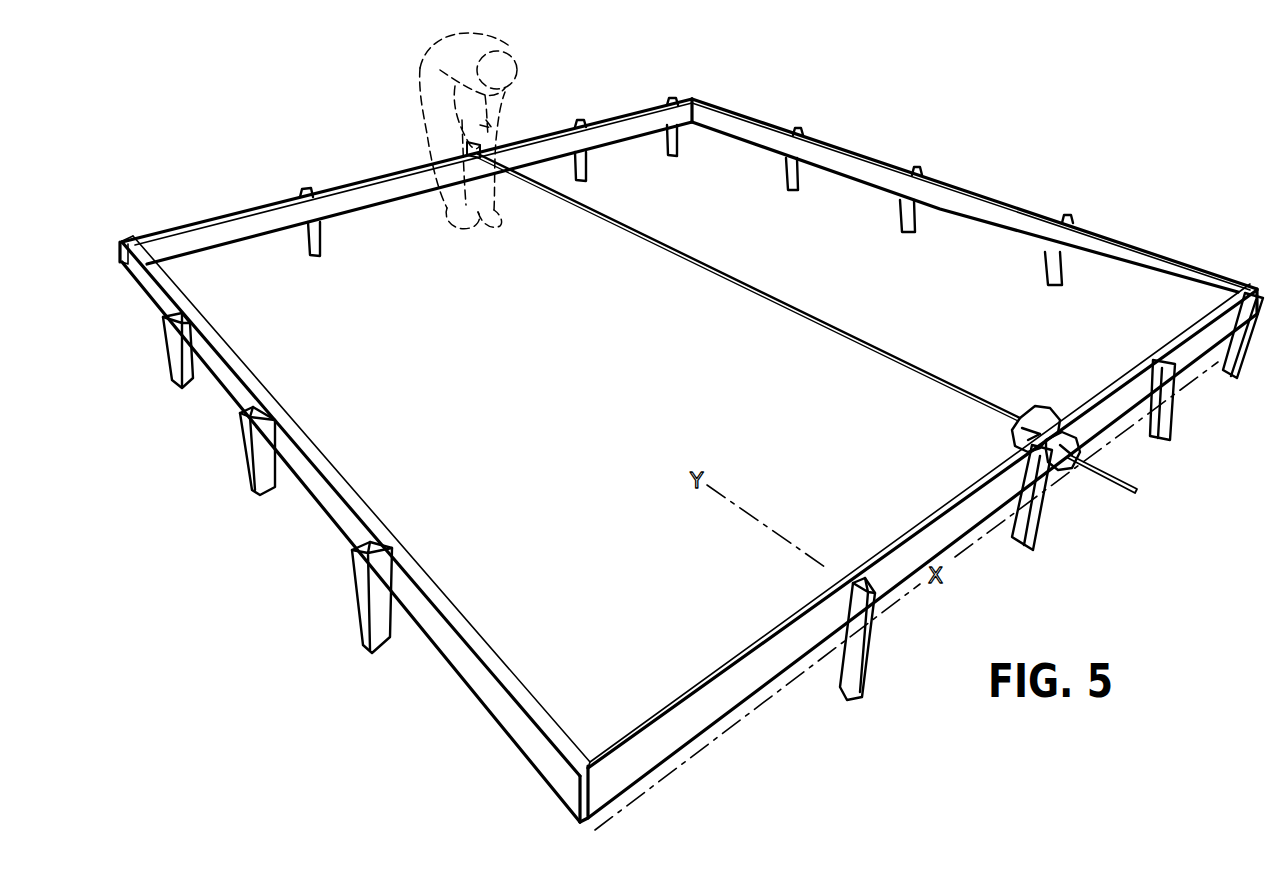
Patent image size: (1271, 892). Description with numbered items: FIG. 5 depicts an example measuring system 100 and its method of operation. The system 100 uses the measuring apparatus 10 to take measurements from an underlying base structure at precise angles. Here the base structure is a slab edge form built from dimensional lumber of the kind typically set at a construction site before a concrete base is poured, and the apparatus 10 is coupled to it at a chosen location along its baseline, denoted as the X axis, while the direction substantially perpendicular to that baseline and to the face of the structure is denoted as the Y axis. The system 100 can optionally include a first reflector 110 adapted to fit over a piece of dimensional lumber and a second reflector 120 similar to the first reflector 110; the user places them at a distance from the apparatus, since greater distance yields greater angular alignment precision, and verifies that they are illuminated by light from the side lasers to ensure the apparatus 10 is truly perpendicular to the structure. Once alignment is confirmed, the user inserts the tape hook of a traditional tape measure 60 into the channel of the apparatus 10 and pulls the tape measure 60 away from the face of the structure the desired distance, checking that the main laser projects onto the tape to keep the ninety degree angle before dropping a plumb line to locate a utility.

The measuring apparatus 10 is at (983, 446).
The tape measure 60 is at (811, 328).
The system 100 is at (416, 383).
The first reflector 110 is at (592, 718).
The second reflector 120 is at (1180, 315).